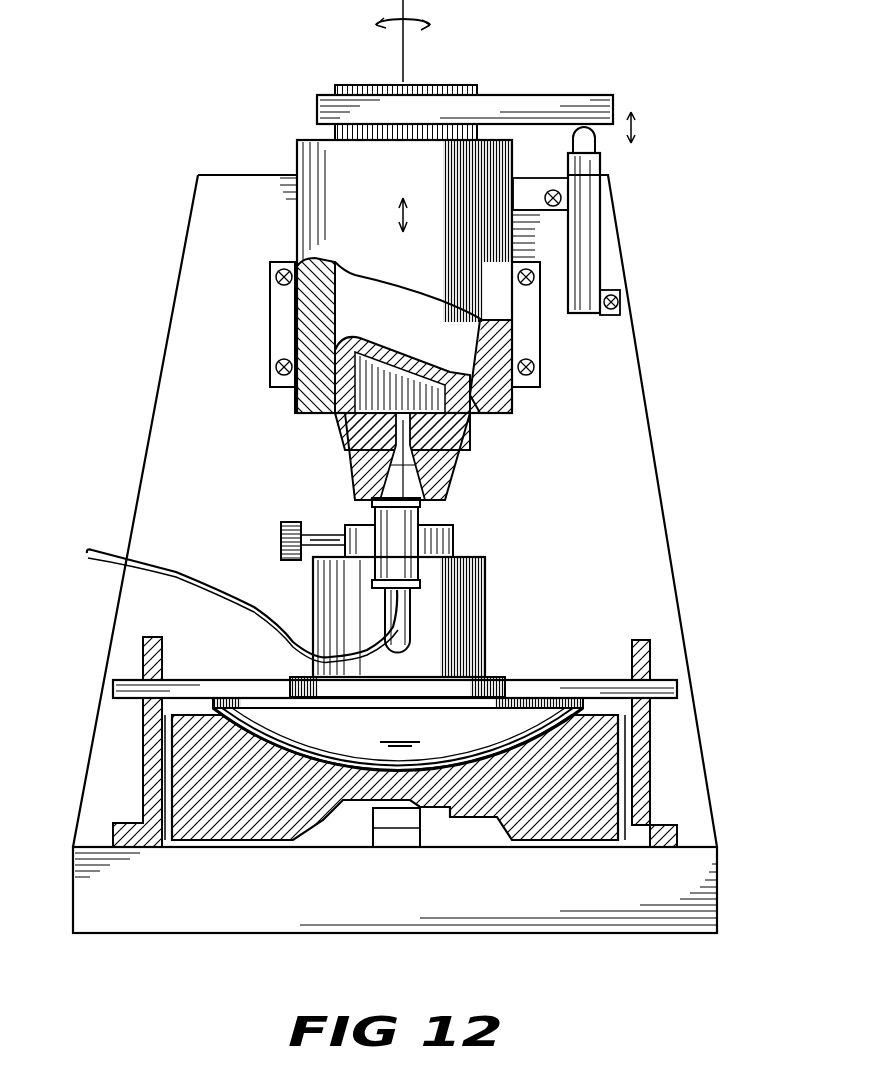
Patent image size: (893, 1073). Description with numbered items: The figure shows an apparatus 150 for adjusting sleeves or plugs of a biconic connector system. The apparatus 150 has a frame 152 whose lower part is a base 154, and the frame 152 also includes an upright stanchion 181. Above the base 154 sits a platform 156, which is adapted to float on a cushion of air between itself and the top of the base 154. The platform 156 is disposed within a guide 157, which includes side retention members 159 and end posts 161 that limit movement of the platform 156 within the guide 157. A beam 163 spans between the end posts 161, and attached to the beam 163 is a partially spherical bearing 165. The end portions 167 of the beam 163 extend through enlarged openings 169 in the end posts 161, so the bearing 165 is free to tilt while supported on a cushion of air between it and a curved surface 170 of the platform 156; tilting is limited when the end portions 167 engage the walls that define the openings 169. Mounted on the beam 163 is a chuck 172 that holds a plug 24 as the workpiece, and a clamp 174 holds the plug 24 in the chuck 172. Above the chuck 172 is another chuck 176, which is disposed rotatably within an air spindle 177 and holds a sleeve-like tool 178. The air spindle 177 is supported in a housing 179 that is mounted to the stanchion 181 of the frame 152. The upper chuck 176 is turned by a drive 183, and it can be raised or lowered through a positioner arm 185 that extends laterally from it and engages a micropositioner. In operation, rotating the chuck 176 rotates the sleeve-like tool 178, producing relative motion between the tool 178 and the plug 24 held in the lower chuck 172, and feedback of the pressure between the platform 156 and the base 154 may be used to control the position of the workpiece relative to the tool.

The apparatus 150 is at (483, 36).
The frame 152 is at (661, 508).
The base 154 is at (86, 909).
The platform 156 is at (215, 833).
The guide 157 is at (650, 766).
The side retention members 159 is at (400, 846).
The end posts 161 is at (140, 786).
The beam 163 is at (570, 682).
The partially spherical bearing 165 is at (523, 715).
The end portions 167 is at (590, 250).
The enlarged openings 169 is at (142, 662).
The curved surface 170 is at (290, 756).
The chuck 172 is at (485, 613).
The clamp 174 is at (278, 531).
The chuck 176 is at (331, 430).
The air spindle 177 is at (494, 413).
The sleeve-like tool 178 is at (448, 470).
The housing 179 is at (527, 351).
The stanchion 181 is at (628, 384).
The drive 183 is at (335, 133).
The positioner arm 185 is at (526, 106).
The plug 24 is at (421, 512).